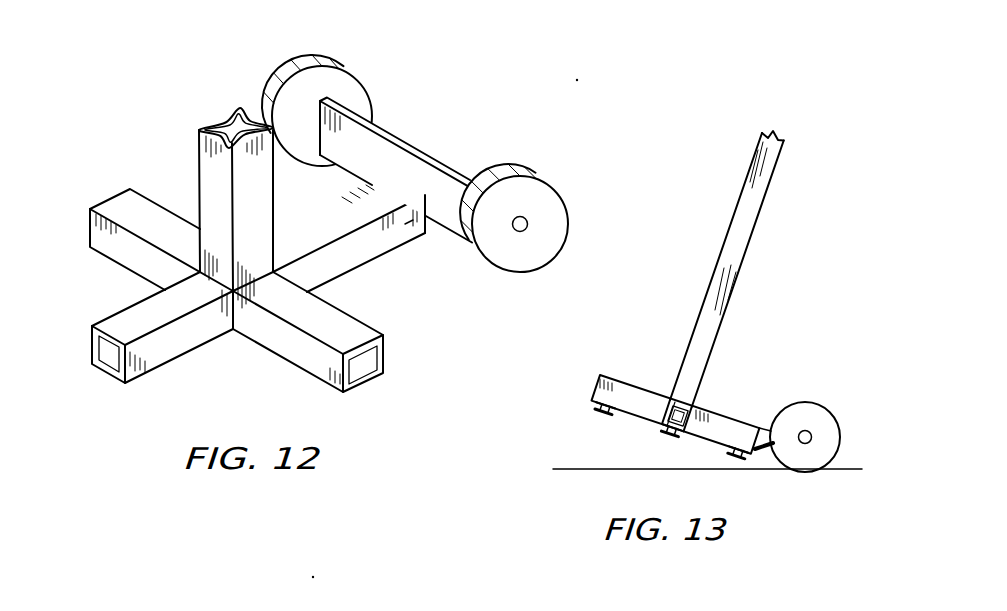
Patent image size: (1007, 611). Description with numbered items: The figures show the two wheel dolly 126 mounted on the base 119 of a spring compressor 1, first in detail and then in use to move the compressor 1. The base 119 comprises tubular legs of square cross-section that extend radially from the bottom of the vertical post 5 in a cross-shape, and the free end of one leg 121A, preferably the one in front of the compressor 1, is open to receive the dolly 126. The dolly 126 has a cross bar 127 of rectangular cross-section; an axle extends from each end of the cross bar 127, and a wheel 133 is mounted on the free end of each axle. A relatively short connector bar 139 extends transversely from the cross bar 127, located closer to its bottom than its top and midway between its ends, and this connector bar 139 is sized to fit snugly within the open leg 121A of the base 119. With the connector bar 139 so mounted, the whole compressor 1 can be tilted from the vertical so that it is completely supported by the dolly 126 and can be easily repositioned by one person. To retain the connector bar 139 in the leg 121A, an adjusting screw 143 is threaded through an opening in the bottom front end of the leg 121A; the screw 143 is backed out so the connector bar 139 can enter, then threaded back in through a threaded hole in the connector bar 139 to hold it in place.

In FIG. 13, the sign stand assembly 1 is at (755, 328).
In FIG. 13, the vertical post 5 is at (757, 235).
In FIG. 12, the base 119 is at (257, 250).
In FIG. 13, the base 119 is at (641, 378).
In FIG. 12, the leg 121A is at (334, 284).
In FIG. 12, the dolly 126 is at (416, 152).
In FIG. 13, the dolly 126 is at (839, 434).
In FIG. 12, the cross bar 127 is at (422, 145).
In FIG. 12, the wheel 133 is at (314, 60).
In FIG. 13, the wheel 133 is at (847, 428).
In FIG. 12, the connector bar 139 is at (410, 222).
In FIG. 13, the connector bar 139 is at (760, 457).
In FIG. 13, the adjusting screw 143 is at (740, 459).